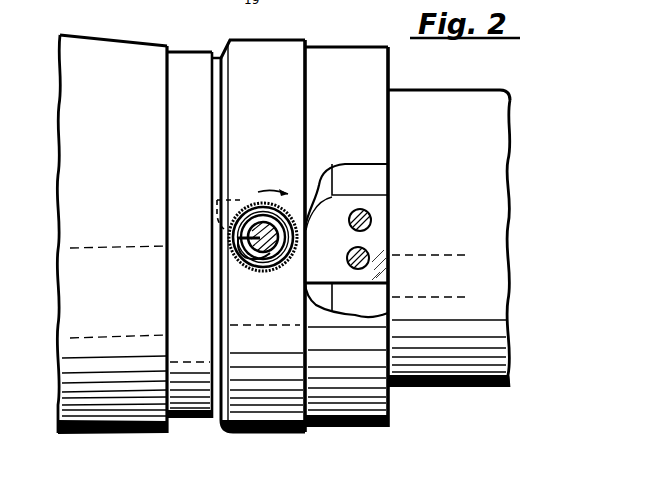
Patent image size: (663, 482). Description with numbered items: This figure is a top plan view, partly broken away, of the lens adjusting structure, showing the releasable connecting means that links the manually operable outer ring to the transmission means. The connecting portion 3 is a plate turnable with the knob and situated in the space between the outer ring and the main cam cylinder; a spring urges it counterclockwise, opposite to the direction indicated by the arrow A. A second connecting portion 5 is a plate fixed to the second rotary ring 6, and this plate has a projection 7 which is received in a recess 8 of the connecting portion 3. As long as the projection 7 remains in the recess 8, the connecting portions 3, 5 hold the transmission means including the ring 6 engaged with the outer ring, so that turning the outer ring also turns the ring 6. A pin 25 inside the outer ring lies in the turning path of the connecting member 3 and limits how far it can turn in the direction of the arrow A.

The pin 25 is at (240, 192).
The connecting portion 3 is at (232, 268).
The recess 8 is at (262, 273).
The projection 7 is at (268, 276).
The connecting portion 5 is at (383, 222).
The second rotary ring 6 is at (373, 303).
The arrow A is at (273, 181).